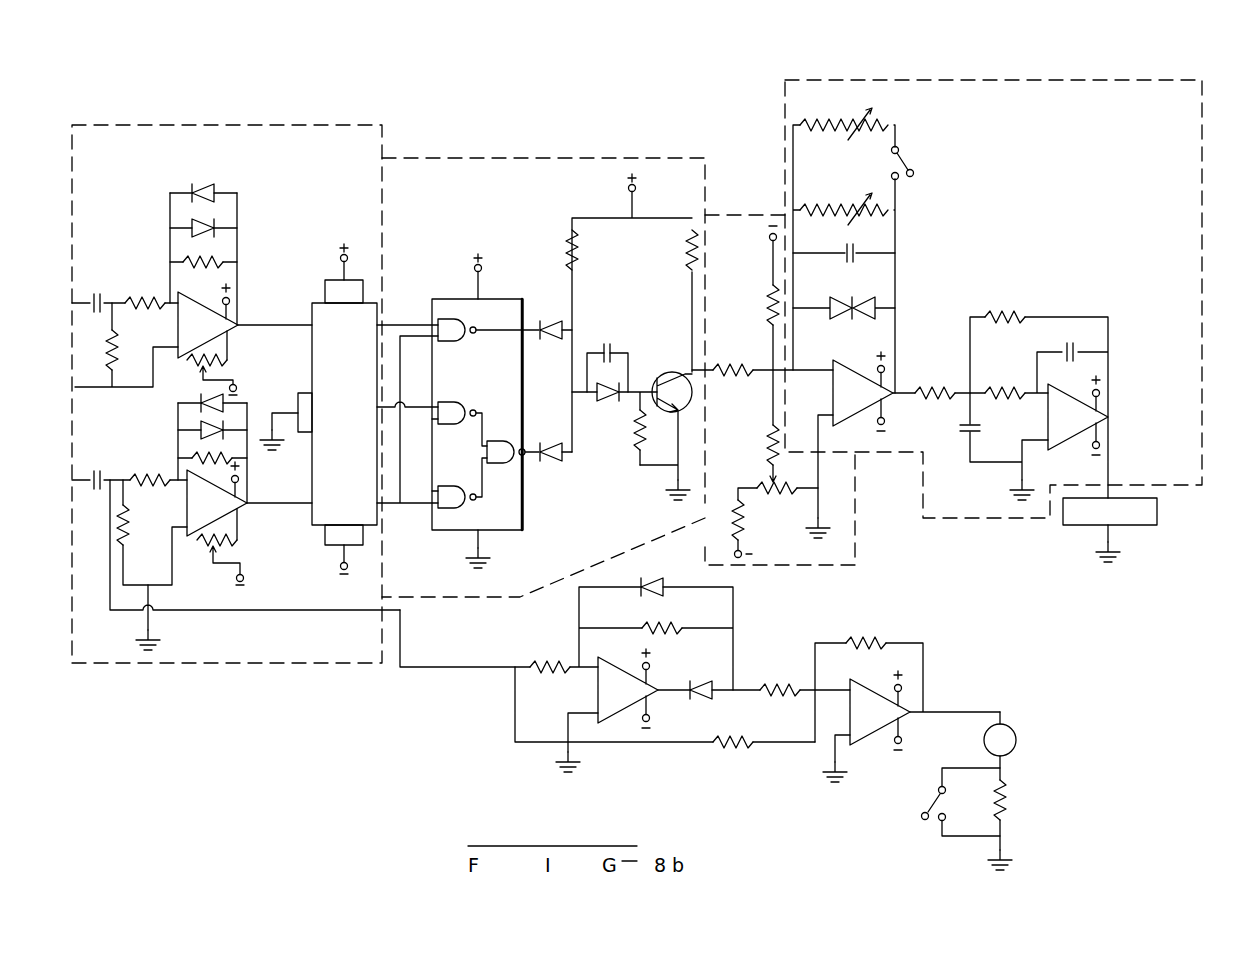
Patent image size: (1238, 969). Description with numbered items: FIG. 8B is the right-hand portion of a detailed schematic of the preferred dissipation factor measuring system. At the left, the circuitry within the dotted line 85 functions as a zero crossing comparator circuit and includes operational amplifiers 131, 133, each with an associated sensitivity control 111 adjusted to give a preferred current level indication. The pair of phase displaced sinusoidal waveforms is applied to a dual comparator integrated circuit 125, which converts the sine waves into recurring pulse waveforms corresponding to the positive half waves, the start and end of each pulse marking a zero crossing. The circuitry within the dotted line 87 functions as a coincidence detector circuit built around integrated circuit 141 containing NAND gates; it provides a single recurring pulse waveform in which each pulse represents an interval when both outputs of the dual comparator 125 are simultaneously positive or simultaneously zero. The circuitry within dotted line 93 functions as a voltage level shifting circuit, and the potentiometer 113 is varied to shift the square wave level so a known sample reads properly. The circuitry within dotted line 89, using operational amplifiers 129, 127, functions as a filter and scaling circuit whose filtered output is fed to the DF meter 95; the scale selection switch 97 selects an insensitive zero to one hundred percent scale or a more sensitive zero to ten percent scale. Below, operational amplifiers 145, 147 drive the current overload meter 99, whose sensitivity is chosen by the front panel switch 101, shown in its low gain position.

The zero crossing comparator circuit 85 is at (246, 125).
The coincidence detector circuit 87 is at (520, 158).
The filter and scaling circuit 89 is at (960, 80).
The voltage level shifting circuit 93 is at (737, 210).
The DF meter 95 is at (1145, 525).
The scale selection switch 97 is at (905, 158).
The current overload meter 99 is at (1013, 731).
The front panel switch 101 is at (936, 804).
The sensitivity control 111 is at (202, 551).
The potentiometer 113 is at (775, 505).
The dual comparator integrated circuit 125 is at (310, 308).
The operational amplifier 127 is at (1048, 420).
The operational amplifier 129 is at (857, 360).
The operational amplifier 131 is at (178, 325).
The operational amplifier 133 is at (187, 503).
The integrated circuit containing NAND gates 141 is at (495, 299).
The operational amplifier 145 is at (598, 690).
The operational amplifier 147 is at (876, 736).